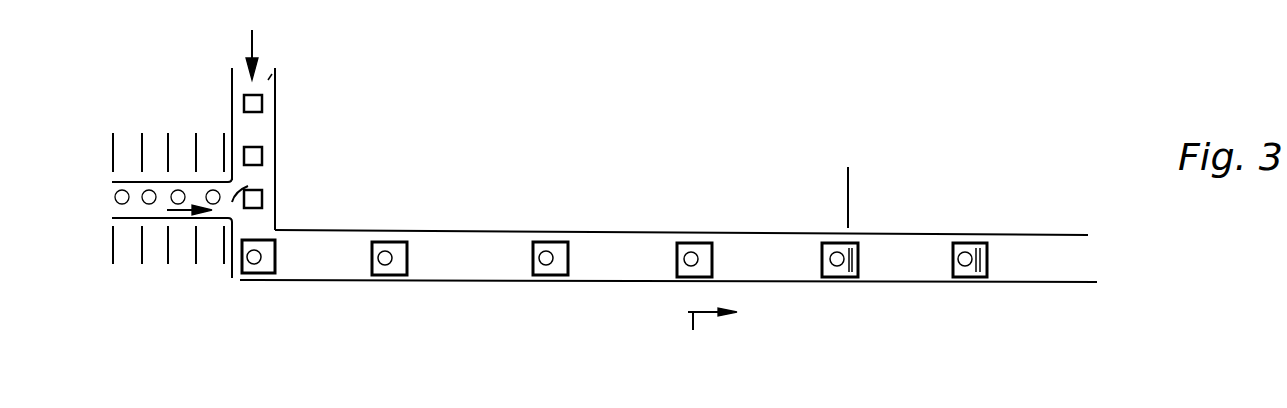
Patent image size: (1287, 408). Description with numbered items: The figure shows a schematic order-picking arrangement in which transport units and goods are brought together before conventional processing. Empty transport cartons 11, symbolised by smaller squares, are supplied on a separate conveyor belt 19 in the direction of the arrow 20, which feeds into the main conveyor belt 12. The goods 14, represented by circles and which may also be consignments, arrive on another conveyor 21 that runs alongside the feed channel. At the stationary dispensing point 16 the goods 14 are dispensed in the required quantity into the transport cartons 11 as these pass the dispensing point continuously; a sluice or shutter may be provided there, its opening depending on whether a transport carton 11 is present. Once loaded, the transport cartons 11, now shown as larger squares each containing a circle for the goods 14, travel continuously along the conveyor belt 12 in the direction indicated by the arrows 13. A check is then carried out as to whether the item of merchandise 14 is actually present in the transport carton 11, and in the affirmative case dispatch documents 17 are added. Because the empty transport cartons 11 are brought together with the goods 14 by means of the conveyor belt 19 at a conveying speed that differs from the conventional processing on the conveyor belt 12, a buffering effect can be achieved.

The transport carton 11 is at (267, 100).
The conveyor belt 12 is at (480, 275).
The arrows 13 is at (709, 332).
The goods 14 is at (388, 252).
The dispensing point 16 is at (248, 186).
The dispatch documents 17 is at (117, 202).
The conveyor belt 19 is at (280, 70).
The arrow 20 is at (255, 42).
The conveyor 21 is at (132, 212).